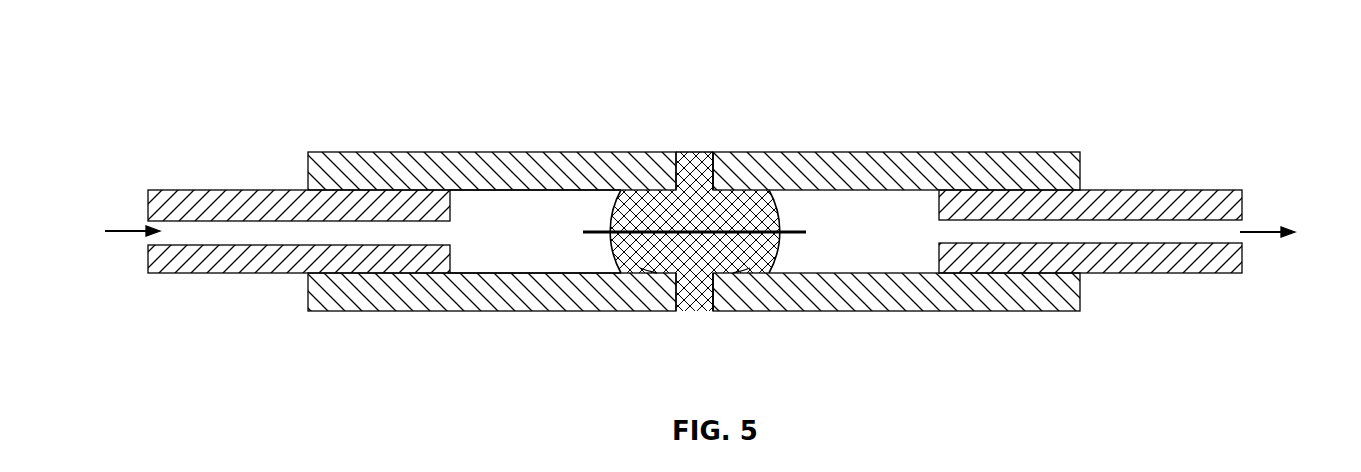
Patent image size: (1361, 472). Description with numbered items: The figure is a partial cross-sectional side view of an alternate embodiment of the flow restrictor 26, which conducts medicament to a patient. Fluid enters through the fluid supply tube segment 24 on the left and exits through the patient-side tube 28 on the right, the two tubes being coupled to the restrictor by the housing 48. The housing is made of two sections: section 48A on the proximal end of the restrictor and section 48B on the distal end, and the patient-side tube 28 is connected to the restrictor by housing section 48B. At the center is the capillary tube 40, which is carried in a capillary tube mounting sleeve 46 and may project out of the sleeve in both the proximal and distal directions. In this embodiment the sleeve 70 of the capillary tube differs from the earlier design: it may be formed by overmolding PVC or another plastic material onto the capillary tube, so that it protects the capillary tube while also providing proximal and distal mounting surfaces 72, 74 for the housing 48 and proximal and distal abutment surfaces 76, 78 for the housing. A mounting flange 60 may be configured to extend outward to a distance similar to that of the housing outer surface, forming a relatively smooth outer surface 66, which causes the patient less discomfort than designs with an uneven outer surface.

The restrictor 26 is at (152, 91).
The fluid supply tube segment 24 is at (205, 190).
The patient-side tube 28 is at (1148, 189).
The housing 48 is at (405, 152).
The housing section 48A is at (425, 311).
The housing section 48B is at (1010, 311).
The smooth outer surface 66 is at (967, 158).
The capillary tube mounting sleeve 46 is at (543, 244).
The mounting flange 60 is at (700, 300).
The capillary tube 40 is at (592, 232).
The proximal abutment surface 76 is at (677, 158).
The distal abutment surface 78 is at (718, 155).
The sleeve 70 is at (716, 262).
The proximal mounting surface 72 is at (657, 272).
The distal mounting surface 74 is at (762, 272).